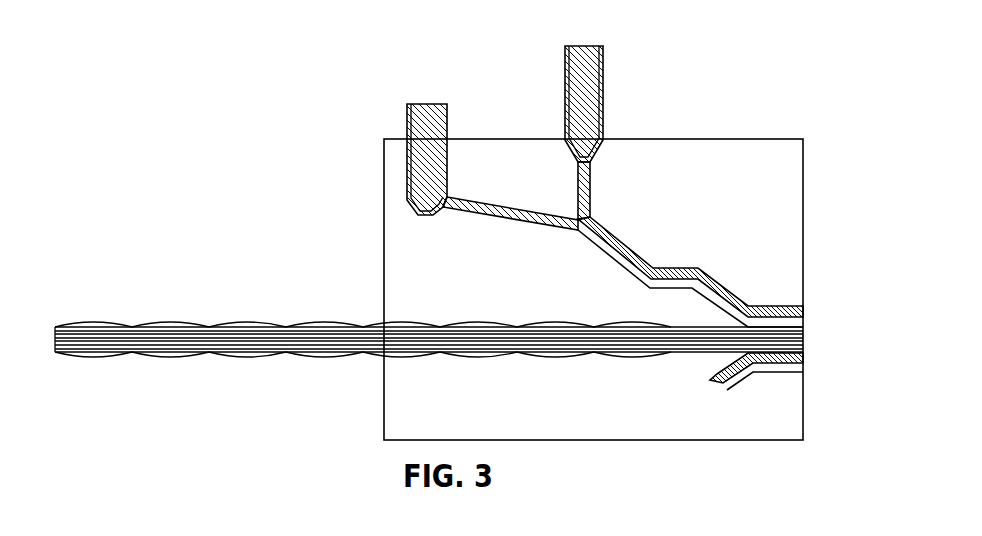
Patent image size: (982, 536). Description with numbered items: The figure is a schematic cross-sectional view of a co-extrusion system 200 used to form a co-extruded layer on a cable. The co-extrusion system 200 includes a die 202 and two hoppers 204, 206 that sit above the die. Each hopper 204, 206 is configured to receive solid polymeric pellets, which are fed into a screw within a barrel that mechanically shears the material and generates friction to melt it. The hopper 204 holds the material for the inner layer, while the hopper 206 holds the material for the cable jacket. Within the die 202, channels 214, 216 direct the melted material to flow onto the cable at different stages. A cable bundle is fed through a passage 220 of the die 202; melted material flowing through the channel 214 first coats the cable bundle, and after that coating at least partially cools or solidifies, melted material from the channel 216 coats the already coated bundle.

The co-extrusion system 200 is at (728, 30).
The die 202 is at (713, 139).
The hopper 204 is at (427, 104).
The hopper 206 is at (587, 46).
The channel 214 is at (493, 216).
The channel 216 is at (637, 254).
The passage 220 is at (370, 367).